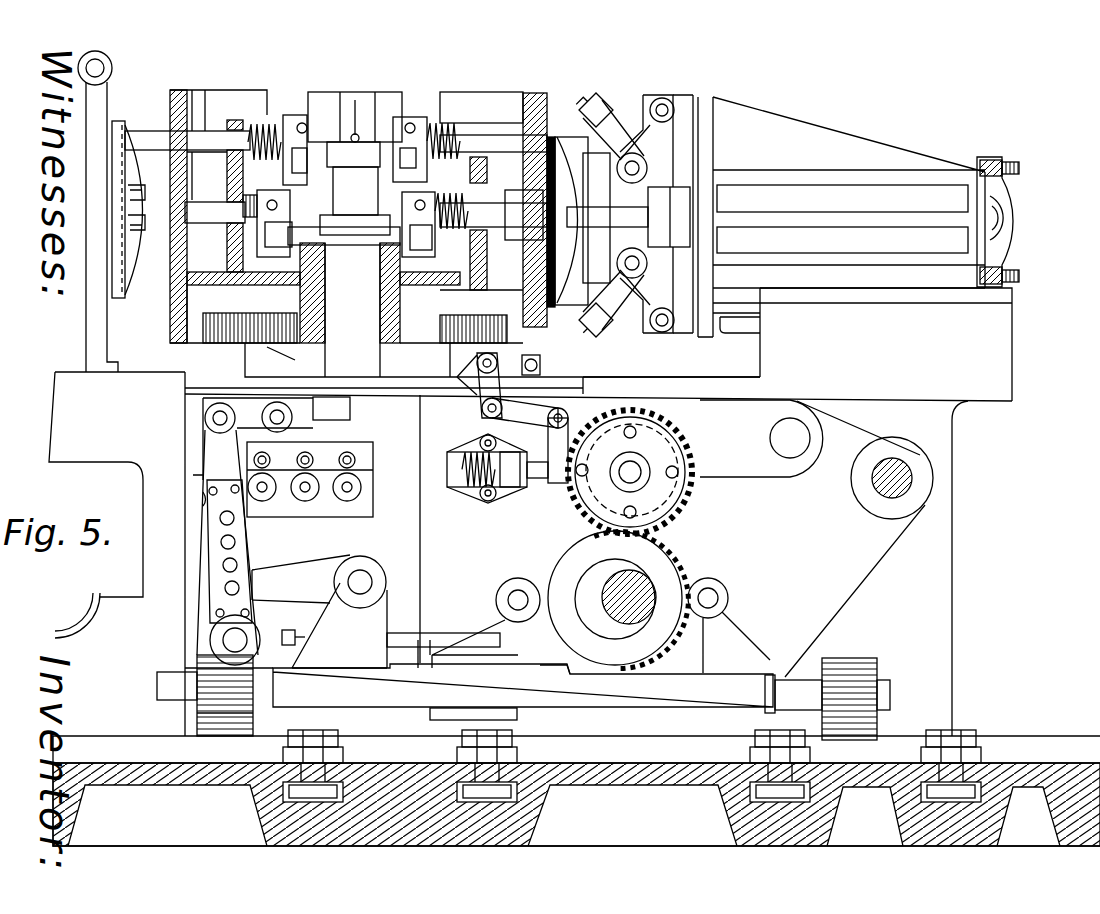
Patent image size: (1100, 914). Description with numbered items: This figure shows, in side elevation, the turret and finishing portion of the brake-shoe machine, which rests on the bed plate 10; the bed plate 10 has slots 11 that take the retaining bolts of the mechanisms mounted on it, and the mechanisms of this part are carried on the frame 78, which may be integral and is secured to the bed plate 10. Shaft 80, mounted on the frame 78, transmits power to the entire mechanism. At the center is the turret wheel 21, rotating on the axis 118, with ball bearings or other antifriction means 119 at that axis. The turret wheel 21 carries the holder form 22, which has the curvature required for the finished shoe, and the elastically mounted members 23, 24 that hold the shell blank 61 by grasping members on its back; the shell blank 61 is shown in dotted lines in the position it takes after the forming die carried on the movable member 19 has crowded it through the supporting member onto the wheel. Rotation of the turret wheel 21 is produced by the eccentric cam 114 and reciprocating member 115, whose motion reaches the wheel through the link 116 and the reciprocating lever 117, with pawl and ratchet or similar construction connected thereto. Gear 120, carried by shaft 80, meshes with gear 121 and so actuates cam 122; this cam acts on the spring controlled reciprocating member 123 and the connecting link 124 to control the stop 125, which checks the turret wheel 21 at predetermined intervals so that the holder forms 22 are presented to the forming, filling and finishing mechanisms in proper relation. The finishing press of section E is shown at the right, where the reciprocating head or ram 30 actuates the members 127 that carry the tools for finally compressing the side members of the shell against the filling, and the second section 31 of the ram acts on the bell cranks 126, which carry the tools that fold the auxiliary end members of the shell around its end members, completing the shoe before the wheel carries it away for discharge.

The bed plate 10 is at (1085, 717).
The slots 11 is at (455, 795).
The movable member 19 is at (160, 820).
The turret wheel 21 is at (172, 322).
The holder form 22 is at (145, 160).
The holding member 23 is at (128, 195).
The holding member 24 is at (128, 225).
The reciprocating head or ram 30 is at (768, 127).
The second section of reciprocating member 31 is at (986, 157).
The shell blank 61 is at (120, 122).
The frame 78 is at (985, 372).
The shaft 80 is at (653, 588).
The eccentric cam 114 is at (573, 560).
The reciprocating member 115 is at (540, 698).
The link 116 is at (305, 596).
The reciprocating lever 117 is at (222, 453).
The axis 118 is at (352, 310).
The ball bearings 119 is at (400, 427).
The gear 120 is at (687, 570).
The gear 121 is at (687, 477).
The cam 122 is at (660, 440).
The spring controlled reciprocating member 123 is at (540, 473).
The connecting link 124 is at (523, 408).
The stop 125 is at (530, 337).
The bell cranks 126 is at (618, 125).
The members carrying compressing tools 127 is at (633, 215).